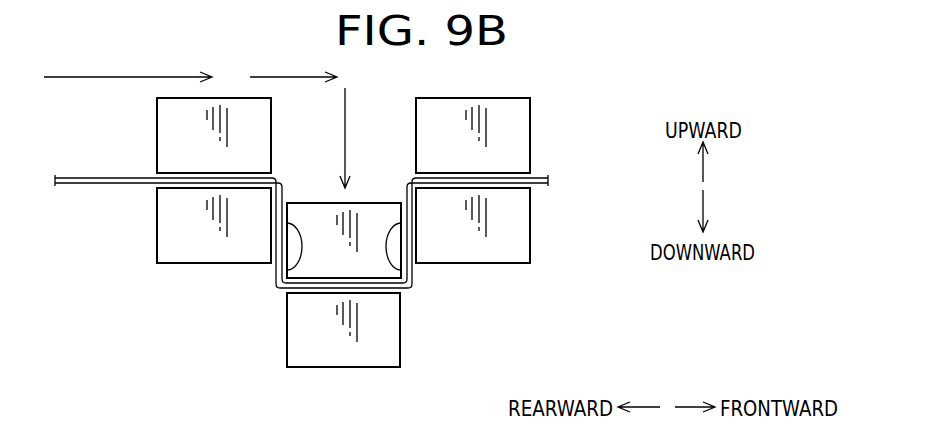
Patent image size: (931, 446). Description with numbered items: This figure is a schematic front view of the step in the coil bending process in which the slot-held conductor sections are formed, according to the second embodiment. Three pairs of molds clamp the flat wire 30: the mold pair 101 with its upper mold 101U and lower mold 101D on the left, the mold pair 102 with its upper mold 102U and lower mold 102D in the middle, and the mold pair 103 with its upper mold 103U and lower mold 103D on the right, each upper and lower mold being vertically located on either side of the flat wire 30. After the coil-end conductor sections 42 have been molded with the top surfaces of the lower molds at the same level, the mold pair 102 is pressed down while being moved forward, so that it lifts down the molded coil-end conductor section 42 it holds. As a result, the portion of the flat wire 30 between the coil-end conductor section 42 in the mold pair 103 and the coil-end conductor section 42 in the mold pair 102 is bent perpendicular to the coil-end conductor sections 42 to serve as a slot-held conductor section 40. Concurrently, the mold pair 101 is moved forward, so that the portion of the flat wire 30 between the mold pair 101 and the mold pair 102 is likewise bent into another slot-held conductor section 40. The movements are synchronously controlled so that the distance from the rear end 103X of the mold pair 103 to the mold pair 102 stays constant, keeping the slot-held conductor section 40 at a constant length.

The flat wire 30 is at (301, 239).
The slot-held conductor section 40 is at (275, 280).
The coil-end conductor section 42 is at (367, 287).
The mold pair 101 is at (170, 215).
The upper mold 101U is at (172, 122).
The lower mold 101D is at (163, 228).
The mold pair 102 is at (361, 317).
The upper mold 102U is at (317, 262).
The lower mold 102D is at (397, 350).
The mold pair 103 is at (517, 215).
The upper mold 103U is at (517, 136).
The lower mold 103D is at (518, 223).
The rear end of the mold pair 103 103X is at (408, 178).